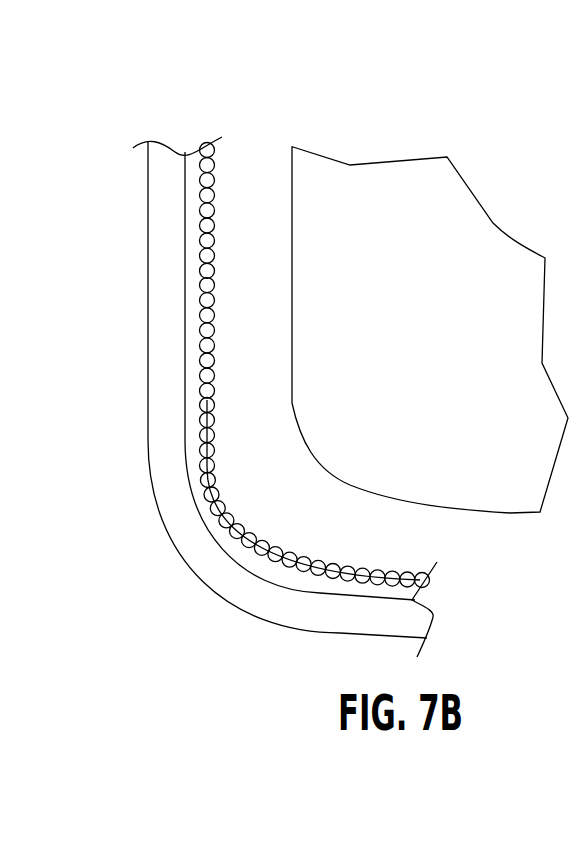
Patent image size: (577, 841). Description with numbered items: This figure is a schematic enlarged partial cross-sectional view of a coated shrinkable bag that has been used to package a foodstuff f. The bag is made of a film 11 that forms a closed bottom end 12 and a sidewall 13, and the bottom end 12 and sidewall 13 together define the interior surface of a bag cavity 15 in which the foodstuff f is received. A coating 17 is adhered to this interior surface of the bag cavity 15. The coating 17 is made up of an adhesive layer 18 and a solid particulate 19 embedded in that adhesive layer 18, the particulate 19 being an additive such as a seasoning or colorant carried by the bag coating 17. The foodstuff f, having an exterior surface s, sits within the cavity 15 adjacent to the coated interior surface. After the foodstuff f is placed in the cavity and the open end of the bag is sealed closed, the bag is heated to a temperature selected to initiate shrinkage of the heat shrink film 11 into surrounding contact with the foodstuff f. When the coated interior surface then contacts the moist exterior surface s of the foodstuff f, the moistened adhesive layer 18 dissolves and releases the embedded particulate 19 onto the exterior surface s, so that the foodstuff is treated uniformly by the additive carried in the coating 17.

The film 11 is at (128, 537).
The closed bottom end 12 is at (367, 622).
The sidewall 13 is at (168, 326).
The bag cavity 15 is at (283, 510).
The coating 17 is at (211, 106).
The adhesive layer 18 is at (407, 595).
The solid particulate 19 is at (412, 572).
The exterior surface of the foodstuff S is at (293, 206).
The foodstuff f is at (437, 367).